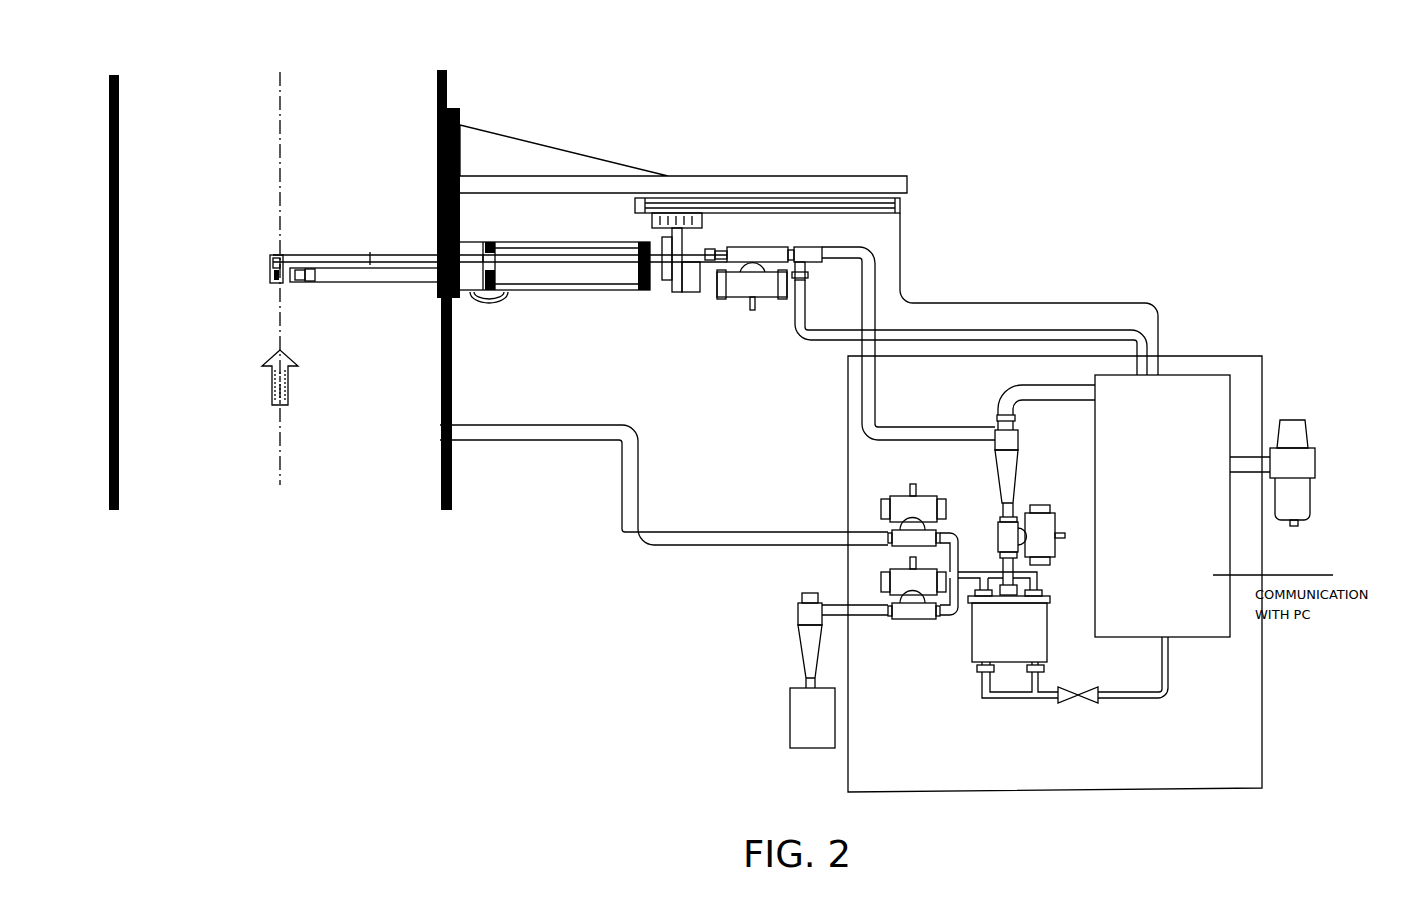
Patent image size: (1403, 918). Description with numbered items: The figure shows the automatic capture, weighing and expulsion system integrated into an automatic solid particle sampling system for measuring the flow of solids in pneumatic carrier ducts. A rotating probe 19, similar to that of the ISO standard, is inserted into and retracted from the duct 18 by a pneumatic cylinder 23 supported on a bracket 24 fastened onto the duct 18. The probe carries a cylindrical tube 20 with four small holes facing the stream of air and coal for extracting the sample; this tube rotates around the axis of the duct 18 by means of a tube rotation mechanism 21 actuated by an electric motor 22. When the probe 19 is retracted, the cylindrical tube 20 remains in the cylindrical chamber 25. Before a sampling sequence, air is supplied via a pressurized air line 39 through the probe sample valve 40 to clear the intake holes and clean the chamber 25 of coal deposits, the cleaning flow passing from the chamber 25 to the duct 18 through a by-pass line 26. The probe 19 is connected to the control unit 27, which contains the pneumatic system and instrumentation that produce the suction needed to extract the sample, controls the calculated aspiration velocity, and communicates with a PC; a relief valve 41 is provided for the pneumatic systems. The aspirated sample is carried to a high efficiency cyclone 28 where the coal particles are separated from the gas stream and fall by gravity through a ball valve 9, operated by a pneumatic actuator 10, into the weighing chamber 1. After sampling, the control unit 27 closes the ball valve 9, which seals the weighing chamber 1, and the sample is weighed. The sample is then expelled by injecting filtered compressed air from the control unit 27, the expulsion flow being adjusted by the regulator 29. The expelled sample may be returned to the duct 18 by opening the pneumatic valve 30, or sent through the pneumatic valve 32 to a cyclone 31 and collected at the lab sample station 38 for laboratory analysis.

The weighing chamber 1 is at (967, 655).
The ball valve 9 is at (999, 543).
The pneumatic actuator 10 is at (1063, 525).
The duct 18 is at (122, 382).
The rotating probe 19 is at (320, 252).
The cylindrical tube 20 is at (345, 285).
The tube rotation mechanism 21 is at (268, 273).
The electric motor 22 is at (688, 293).
The pneumatic cylinder 23 is at (907, 200).
The bracket 24 is at (488, 152).
The cylindrical chamber 25 is at (570, 292).
The by-pass line 26 is at (487, 300).
The control unit 27 is at (1185, 392).
The cyclone 28 is at (1018, 470).
The regulator 29 is at (1078, 700).
The pneumatic valve 30 is at (878, 527).
The cyclone 31 is at (800, 640).
The pneumatic valve 32 is at (912, 622).
The lab sample station 38 is at (785, 722).
The pressurized air line 39 is at (950, 328).
The probe sample valve 40 is at (745, 237).
The relief valve 41 is at (1320, 482).